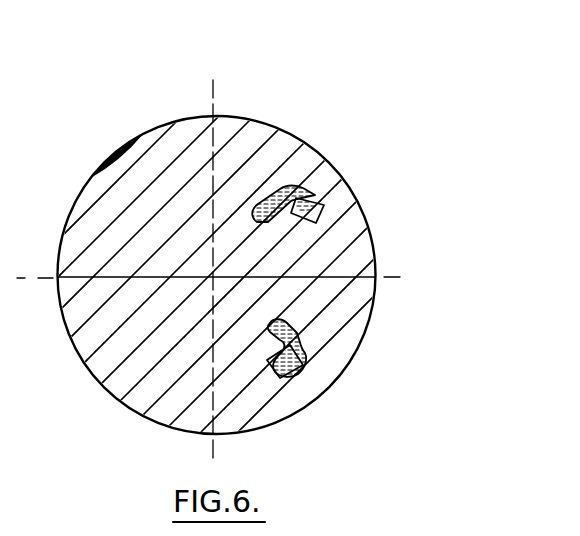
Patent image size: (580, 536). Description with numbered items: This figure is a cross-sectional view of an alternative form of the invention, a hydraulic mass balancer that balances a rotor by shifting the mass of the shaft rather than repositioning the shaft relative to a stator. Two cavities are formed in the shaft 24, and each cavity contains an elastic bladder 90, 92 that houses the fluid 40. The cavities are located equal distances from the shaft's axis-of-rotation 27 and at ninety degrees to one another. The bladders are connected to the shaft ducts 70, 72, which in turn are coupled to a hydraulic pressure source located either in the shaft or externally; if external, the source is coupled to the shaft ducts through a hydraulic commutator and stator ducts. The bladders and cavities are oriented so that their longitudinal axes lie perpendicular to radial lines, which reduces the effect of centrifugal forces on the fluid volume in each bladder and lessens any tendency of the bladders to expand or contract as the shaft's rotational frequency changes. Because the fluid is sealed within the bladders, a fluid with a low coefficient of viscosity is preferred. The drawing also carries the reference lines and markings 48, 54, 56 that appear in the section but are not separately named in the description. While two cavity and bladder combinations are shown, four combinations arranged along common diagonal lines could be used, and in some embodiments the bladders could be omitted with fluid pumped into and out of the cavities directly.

The shaft 24 is at (285, 111).
The axis-of-rotation 27 is at (215, 277).
The fluid 40 is at (306, 192).
The reference element 48 is at (10, 69).
The horizontal axis 54 is at (45, 278).
The vertical axis 56 is at (215, 88).
The shaft duct 70 is at (280, 217).
The shaft duct 72 is at (298, 332).
The bladder 90 is at (324, 200).
The bladder 92 is at (300, 378).